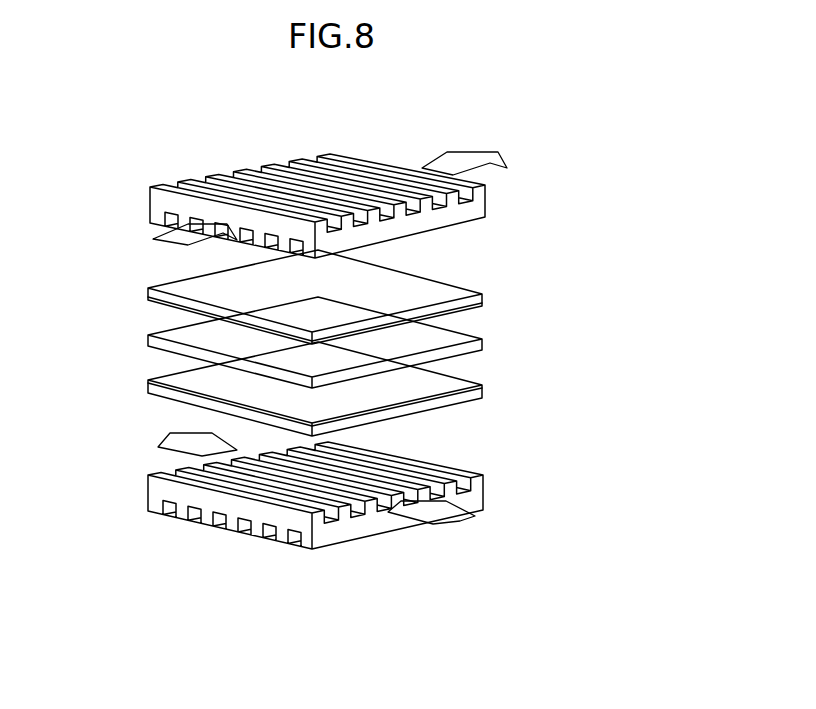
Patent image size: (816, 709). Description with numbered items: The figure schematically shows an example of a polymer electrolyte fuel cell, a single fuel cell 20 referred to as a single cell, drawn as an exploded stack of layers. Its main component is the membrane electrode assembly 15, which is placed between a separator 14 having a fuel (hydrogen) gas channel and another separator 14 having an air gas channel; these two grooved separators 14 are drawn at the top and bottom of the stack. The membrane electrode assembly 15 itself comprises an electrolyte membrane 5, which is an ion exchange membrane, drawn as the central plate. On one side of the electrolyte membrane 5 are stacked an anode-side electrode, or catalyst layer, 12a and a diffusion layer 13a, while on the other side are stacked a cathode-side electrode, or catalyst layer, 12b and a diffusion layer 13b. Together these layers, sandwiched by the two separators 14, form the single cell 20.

The fuel cell 20 is at (112, 245).
The separator 14 is at (371, 162).
The membrane electrode assembly 15 is at (562, 247).
The diffusion layer 13a is at (467, 287).
The anode-side electrode (catalyst layer) 12a is at (487, 306).
The electrolyte membrane 5 is at (487, 347).
The cathode-side electrode (catalyst layer) 12b is at (486, 383).
The diffusion layer 13b is at (472, 401).